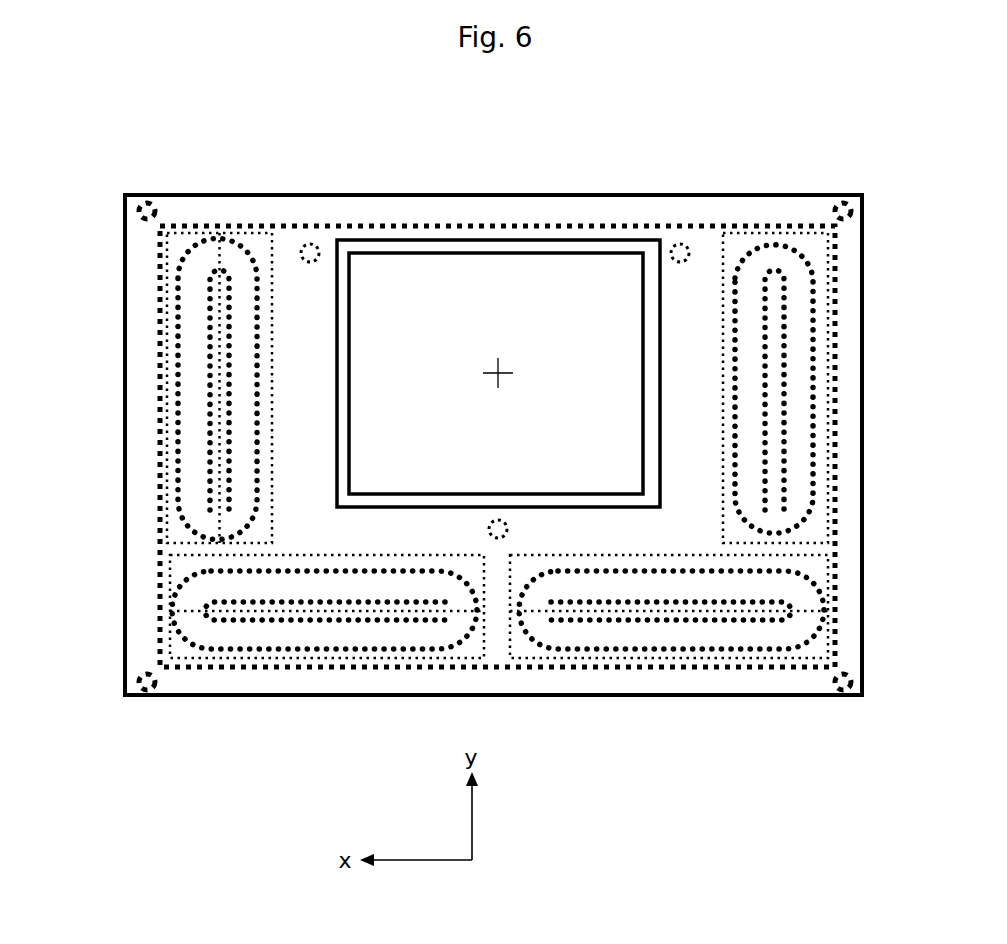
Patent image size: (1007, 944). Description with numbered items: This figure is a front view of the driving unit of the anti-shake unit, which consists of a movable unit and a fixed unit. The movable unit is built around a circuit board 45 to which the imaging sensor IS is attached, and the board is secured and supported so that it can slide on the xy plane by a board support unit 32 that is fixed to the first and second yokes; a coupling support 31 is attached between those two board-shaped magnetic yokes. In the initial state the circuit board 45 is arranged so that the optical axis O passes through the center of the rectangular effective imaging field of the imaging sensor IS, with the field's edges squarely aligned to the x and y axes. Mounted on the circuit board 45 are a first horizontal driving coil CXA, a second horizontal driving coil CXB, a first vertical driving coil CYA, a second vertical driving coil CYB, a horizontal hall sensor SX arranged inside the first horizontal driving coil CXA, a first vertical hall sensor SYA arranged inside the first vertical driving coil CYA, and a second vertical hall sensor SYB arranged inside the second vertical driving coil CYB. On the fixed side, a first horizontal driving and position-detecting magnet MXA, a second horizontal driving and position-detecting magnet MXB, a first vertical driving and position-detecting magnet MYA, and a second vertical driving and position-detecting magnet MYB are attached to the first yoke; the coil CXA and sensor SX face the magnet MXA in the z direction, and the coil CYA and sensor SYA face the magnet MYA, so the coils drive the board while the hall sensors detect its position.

The coupling support 31 is at (142, 205).
The board support unit 32 is at (311, 263).
The circuit board 45 is at (538, 228).
The imaging sensor IS is at (617, 253).
The optical axis O is at (500, 378).
The first horizontal driving and position-detecting magnet MXA is at (163, 290).
The second horizontal driving and position-detecting magnet MXB is at (830, 306).
The first horizontal driving coil CXA is at (180, 338).
The second horizontal driving coil CXB is at (815, 358).
The horizontal hall sensor SX is at (212, 385).
The first vertical driving and position-detecting magnet MYA is at (170, 565).
The second vertical driving and position-detecting magnet MYB is at (826, 556).
The first vertical driving coil CYA is at (180, 590).
The second vertical driving coil CYB is at (815, 590).
The first vertical hall sensor SYA is at (210, 612).
The second vertical hall sensor SYB is at (775, 618).